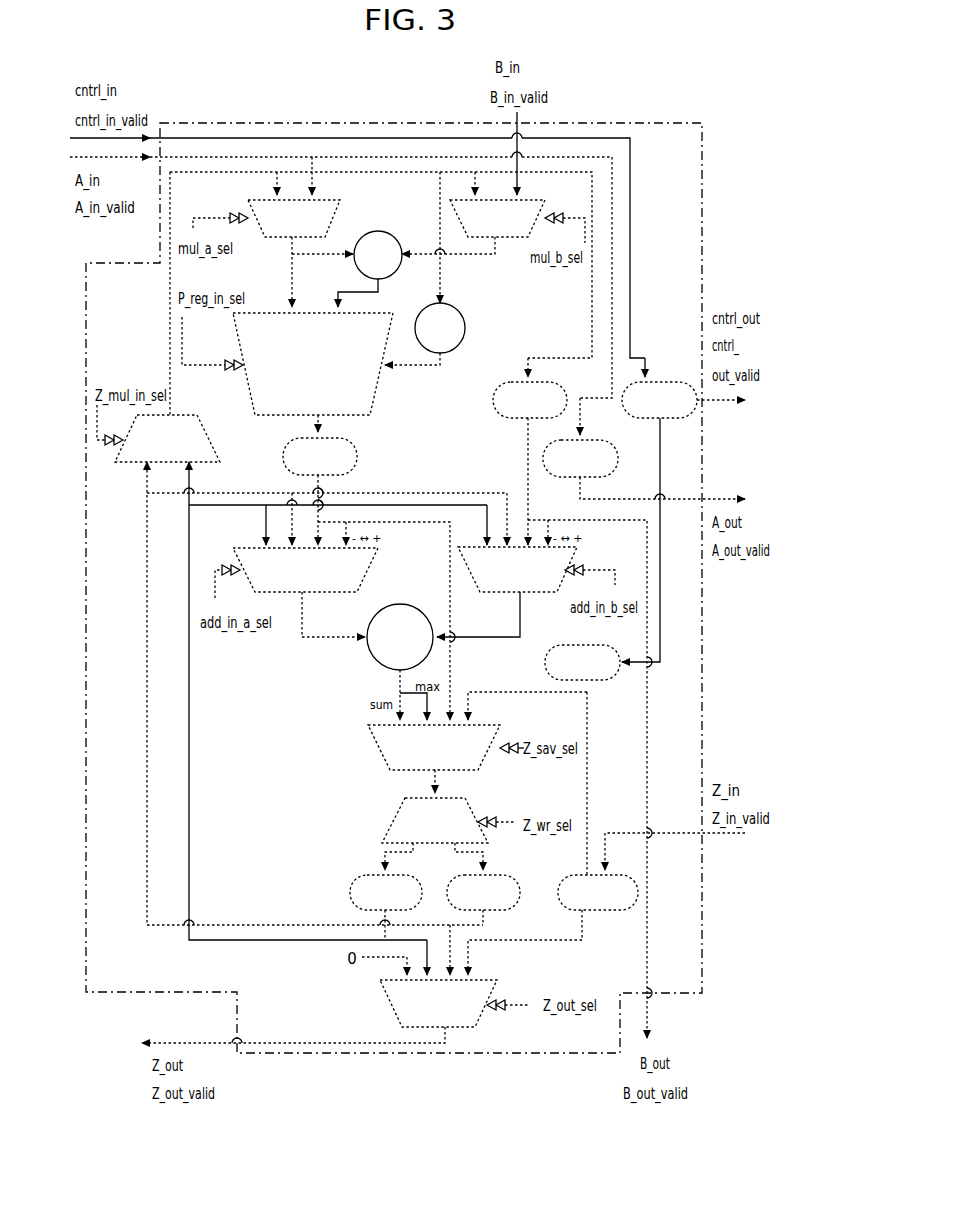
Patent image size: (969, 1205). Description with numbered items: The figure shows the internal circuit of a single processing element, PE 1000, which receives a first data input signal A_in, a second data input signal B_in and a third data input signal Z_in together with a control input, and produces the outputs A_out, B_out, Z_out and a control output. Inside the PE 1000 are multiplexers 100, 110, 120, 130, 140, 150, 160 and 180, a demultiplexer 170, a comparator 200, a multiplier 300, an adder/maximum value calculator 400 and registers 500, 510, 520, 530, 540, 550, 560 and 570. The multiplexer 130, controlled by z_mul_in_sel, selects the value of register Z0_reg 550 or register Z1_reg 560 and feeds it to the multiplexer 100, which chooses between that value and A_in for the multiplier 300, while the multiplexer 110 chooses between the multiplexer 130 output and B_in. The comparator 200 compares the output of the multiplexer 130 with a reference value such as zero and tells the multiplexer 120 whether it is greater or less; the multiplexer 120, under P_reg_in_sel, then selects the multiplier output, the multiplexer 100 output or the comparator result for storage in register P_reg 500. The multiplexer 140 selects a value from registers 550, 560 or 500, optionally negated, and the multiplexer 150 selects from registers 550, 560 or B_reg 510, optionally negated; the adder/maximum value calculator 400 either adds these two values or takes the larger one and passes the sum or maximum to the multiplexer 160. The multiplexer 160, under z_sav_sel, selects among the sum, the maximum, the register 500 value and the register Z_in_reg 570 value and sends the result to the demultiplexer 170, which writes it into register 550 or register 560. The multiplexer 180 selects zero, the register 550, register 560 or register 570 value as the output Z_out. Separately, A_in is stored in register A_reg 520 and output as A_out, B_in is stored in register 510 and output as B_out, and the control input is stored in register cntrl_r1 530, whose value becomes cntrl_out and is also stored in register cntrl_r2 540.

The PE 1000 is at (375, 86).
The multiplexer 100 is at (277, 237).
The multiplexer 110 is at (515, 237).
The multiplexer 120 is at (382, 390).
The multiplexer 130 is at (120, 462).
The multiplexer 140 is at (378, 568).
The multiplexer 150 is at (493, 592).
The multiplexer 160 is at (368, 745).
The demultiplexer 170 is at (382, 833).
The multiplexer 180 is at (385, 1003).
The comparator 200 is at (465, 328).
The multiplier 300 is at (392, 237).
The adder/maximum value calculator 400 is at (370, 655).
The register P_reg 500 is at (357, 457).
The register B_reg 510 is at (493, 400).
The register A_reg 520 is at (557, 477).
The register cntrl_r1 530 is at (665, 382).
The register cntrl_r2 540 is at (545, 662).
The register Z0_reg 550 is at (352, 878).
The register Z1_reg 560 is at (518, 878).
The register Z_in_reg 570 is at (612, 910).